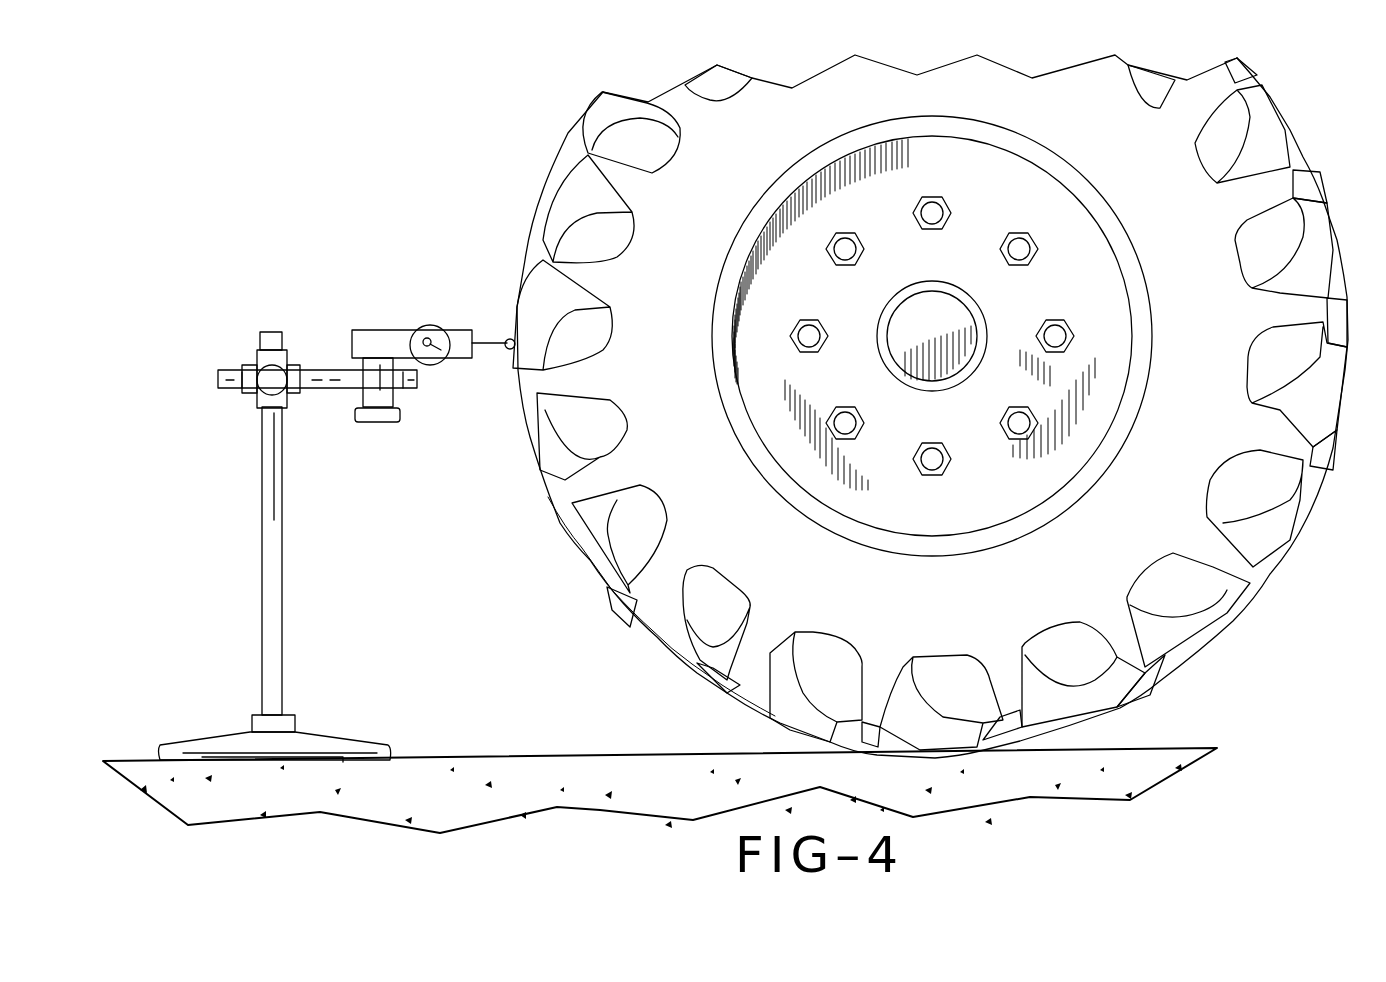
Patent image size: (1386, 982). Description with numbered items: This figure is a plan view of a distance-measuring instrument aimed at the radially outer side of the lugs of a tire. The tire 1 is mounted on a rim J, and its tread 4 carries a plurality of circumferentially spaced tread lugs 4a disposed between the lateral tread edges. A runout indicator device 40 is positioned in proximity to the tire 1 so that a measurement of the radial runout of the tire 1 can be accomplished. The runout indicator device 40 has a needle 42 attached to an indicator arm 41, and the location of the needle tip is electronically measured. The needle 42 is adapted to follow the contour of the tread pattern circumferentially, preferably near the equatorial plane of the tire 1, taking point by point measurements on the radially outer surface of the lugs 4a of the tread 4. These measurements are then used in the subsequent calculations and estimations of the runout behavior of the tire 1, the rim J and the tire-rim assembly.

The tire 1 is at (900, 406).
The tread 4 is at (528, 476).
The tread lugs 4a is at (563, 533).
The runout indicator device 40 is at (262, 512).
The indicator arm 41 is at (325, 370).
The needle 42 is at (490, 332).
The rim J is at (753, 370).